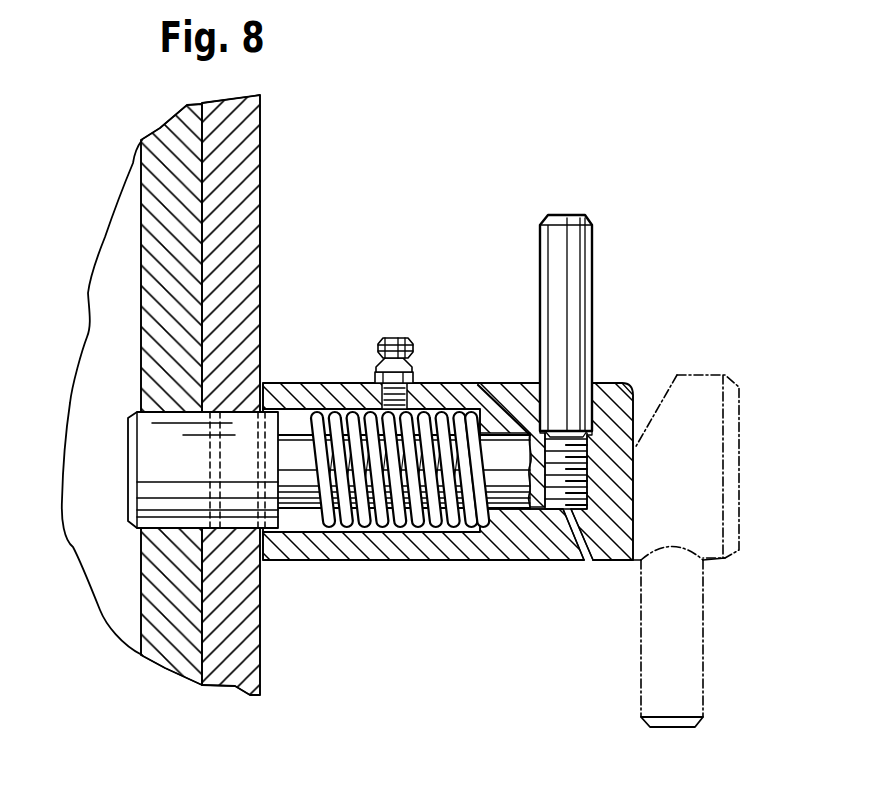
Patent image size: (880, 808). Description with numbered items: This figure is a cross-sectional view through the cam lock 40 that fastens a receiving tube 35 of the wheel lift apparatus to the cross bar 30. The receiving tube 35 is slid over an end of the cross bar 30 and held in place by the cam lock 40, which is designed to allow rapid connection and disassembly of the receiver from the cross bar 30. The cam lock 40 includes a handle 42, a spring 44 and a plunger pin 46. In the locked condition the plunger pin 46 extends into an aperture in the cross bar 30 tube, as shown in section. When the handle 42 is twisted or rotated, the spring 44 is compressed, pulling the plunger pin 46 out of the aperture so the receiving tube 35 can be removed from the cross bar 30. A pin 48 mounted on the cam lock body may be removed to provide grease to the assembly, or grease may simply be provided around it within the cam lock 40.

The cross bar 30 is at (152, 216).
The receiving tube 35 is at (250, 212).
The cam lock 40 is at (699, 297).
The handle 42 is at (574, 300).
The spring 44 is at (405, 512).
The plunger pin 46 is at (150, 507).
The pin 48 is at (395, 340).